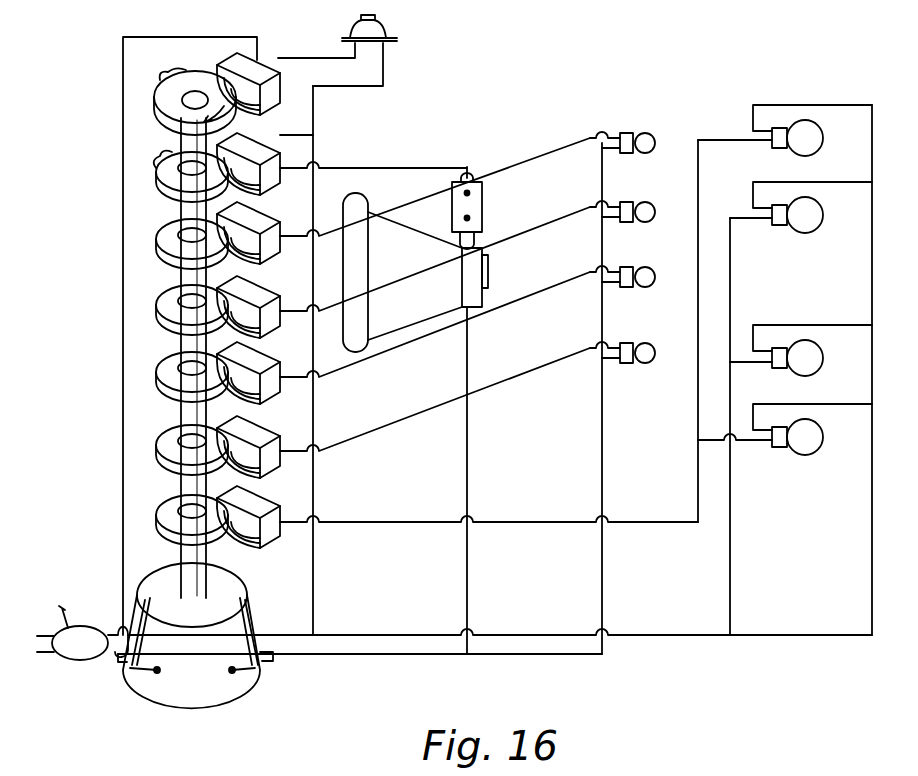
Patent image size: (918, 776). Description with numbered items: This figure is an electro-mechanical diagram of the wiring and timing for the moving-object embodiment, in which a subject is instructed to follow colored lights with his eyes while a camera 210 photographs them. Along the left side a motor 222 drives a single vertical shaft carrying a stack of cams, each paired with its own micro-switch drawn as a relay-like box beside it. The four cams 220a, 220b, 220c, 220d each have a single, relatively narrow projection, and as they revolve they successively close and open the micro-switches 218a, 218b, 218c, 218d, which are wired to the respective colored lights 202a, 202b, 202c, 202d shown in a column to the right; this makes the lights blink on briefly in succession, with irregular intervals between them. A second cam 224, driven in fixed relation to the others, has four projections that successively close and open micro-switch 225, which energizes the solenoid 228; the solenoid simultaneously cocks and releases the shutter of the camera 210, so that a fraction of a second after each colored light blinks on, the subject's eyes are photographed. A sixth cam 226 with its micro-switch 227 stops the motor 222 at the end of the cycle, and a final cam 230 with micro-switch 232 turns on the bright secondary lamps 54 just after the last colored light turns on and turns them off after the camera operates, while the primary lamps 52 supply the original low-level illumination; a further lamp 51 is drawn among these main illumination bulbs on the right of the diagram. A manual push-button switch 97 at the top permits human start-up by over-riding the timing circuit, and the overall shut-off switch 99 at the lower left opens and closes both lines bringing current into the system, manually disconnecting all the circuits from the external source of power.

The manual push-button switch 97 is at (397, 37).
The overall shut-off switch 99 is at (90, 654).
The camera 210 is at (410, 267).
The micro-switch 218a is at (252, 428).
The micro-switch 218b is at (256, 355).
The micro-switch 218c is at (256, 288).
The micro-switch 218d is at (256, 214).
The cam 220a is at (170, 440).
The cam 220b is at (170, 368).
The cam 220c is at (170, 300).
The cam 220d is at (170, 236).
The motor 222 is at (238, 608).
The cam 224 is at (172, 160).
The micro-switch 225 is at (252, 142).
The sixth cam 226 is at (205, 100).
The micro-switch 227 is at (276, 74).
The solenoid 228 is at (484, 210).
The final cam 230 is at (170, 508).
The micro-switch 232 is at (260, 498).
The light 202a is at (682, 330).
The light 202b is at (680, 254).
The light 202c is at (672, 190).
The light 202d is at (672, 120).
The lamp 51 is at (797, 369).
The primary lamps 52 is at (797, 226).
The secondary lamps 54 is at (797, 149).